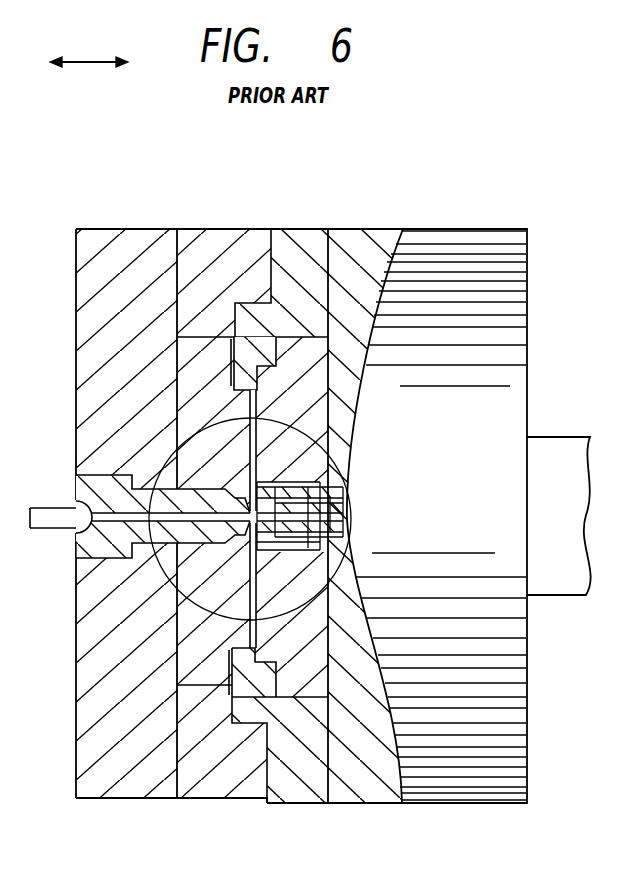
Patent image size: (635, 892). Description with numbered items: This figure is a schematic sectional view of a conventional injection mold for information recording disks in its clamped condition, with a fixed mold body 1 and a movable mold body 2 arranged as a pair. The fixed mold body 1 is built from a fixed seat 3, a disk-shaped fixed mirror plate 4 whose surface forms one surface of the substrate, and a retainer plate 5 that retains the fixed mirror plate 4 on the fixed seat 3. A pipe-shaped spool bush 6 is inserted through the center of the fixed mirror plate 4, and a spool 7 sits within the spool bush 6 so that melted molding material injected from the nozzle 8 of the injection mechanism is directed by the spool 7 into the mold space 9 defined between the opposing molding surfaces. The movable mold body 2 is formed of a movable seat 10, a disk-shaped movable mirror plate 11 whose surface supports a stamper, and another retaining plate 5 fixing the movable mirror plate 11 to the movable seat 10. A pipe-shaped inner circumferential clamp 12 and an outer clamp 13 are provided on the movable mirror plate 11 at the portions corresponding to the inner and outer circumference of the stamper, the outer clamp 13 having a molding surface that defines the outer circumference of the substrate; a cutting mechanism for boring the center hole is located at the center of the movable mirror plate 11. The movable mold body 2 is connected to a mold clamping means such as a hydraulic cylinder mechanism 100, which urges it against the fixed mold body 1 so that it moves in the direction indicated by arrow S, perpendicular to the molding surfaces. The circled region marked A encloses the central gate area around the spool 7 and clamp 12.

The fixed mold body 1 is at (153, 225).
The movable mold body 2 is at (386, 226).
The fixed seat 3 is at (105, 766).
The fixed mirror plate 4 is at (198, 677).
The retainer plate 5 is at (225, 233).
The spool bush 6 is at (73, 547).
The spool 7 is at (137, 511).
The nozzle 8 is at (46, 519).
The mold space 9 is at (259, 618).
The movable seat 10 is at (356, 772).
The movable mirror plate 11 is at (322, 364).
The inner circumferential clamp 12 is at (277, 481).
The outer clamp 13 is at (239, 356).
The hydraulic cylinder mechanism 100 is at (567, 598).
The gate region A is at (354, 507).
The arrow S is at (89, 51).